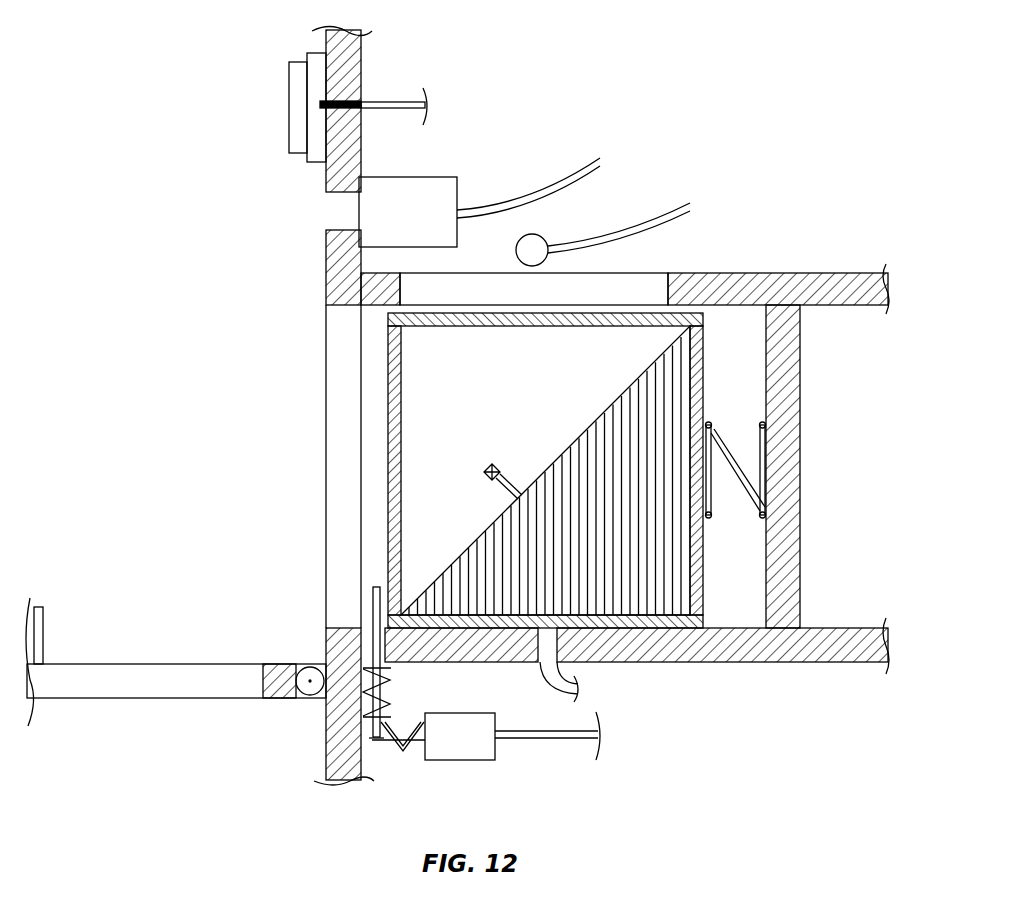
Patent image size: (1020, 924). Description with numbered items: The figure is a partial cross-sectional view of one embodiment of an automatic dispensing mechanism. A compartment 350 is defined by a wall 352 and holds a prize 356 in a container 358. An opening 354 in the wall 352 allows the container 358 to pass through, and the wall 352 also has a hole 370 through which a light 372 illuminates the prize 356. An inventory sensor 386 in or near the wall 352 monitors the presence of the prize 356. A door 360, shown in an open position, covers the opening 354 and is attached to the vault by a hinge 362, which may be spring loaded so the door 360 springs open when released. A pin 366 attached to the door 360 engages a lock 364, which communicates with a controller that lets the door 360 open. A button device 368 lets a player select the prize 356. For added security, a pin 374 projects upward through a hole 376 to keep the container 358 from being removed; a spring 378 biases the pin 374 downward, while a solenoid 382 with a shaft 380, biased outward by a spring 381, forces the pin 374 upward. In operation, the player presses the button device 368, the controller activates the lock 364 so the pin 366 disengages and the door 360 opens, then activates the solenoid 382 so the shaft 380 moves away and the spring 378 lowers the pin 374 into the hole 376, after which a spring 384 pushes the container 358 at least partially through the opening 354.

The compartment 350 is at (479, 487).
The wall 352 is at (738, 278).
The opening 354 is at (335, 327).
The prize 356 is at (494, 466).
The container 358 is at (386, 482).
The door 360 is at (117, 700).
The hinge 362 is at (310, 700).
The lock 364 is at (455, 177).
The pin 366 is at (45, 627).
The button device 368 is at (290, 100).
The hole 370 is at (630, 285).
The light 372 is at (535, 236).
The pin 374 is at (377, 587).
The hole 376 is at (366, 627).
The spring 378 is at (440, 662).
The shaft 380 is at (380, 745).
The spring 381 is at (402, 730).
The solenoid 382 is at (462, 713).
The spring 384 is at (735, 450).
The inventory sensor 386 is at (578, 684).